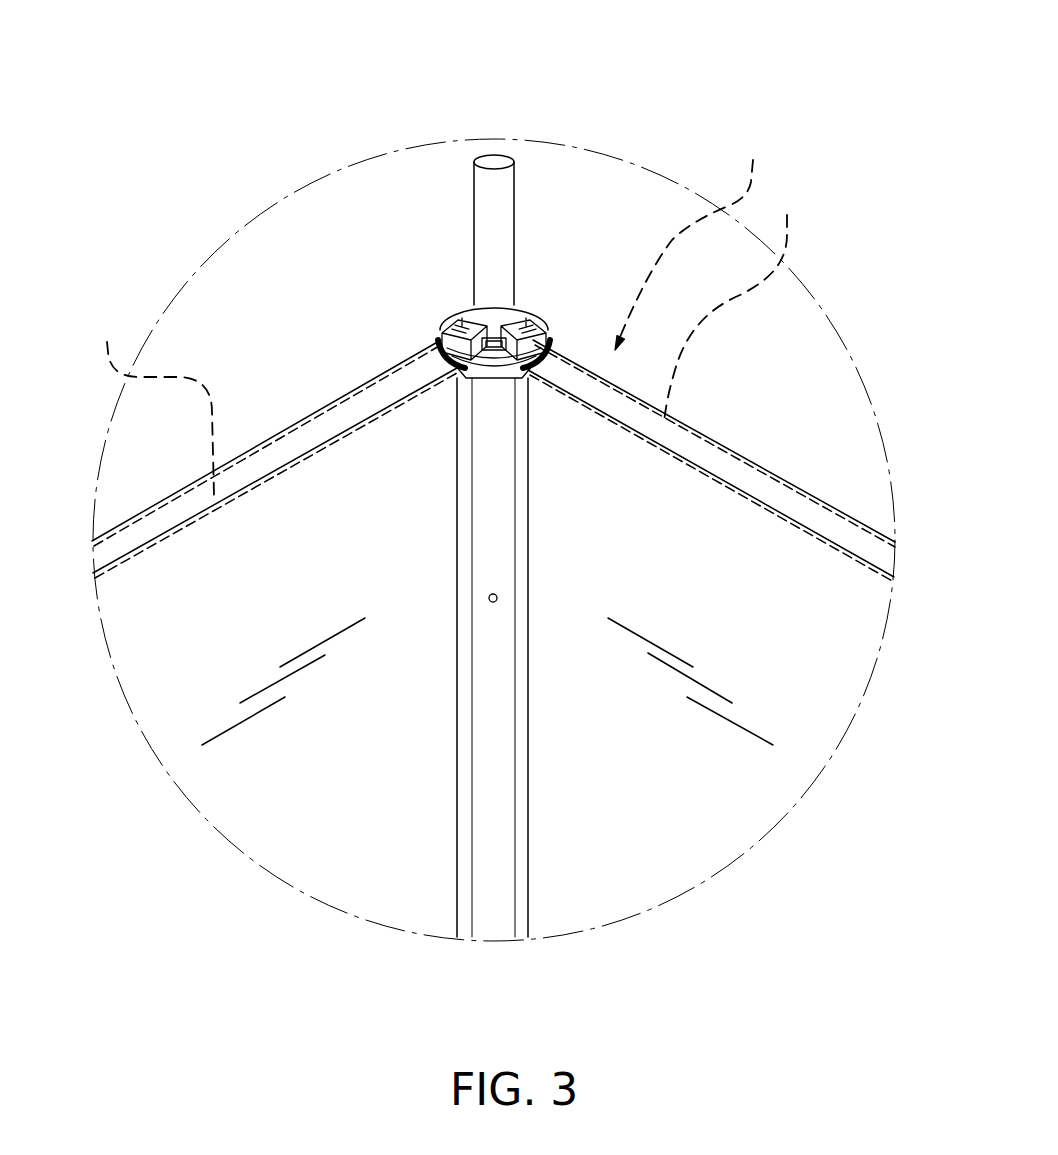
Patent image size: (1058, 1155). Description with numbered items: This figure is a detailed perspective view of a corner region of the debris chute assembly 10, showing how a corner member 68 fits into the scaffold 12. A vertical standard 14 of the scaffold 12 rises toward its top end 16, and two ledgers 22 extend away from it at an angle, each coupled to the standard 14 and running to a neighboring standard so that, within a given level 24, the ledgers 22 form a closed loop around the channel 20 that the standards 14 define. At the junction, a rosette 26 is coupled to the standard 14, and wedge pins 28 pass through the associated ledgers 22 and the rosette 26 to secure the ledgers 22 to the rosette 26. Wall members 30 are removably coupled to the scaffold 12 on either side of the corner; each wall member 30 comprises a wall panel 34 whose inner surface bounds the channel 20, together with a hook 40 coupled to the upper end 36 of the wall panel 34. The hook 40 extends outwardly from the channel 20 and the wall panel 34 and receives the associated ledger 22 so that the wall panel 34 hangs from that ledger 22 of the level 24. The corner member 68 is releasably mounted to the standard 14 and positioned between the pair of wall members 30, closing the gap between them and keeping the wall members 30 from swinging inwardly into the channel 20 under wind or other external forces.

The debris chute assembly 10 is at (618, 50).
The scaffold 12 is at (441, 208).
The standard 14 is at (503, 207).
The top end 16 is at (500, 163).
The channel 20 is at (745, 555).
The ledger 22 is at (448, 335).
The level 24 is at (696, 235).
The rosette 26 is at (470, 310).
The wedge pin 28 is at (447, 325).
The wall member 30 is at (138, 492).
The wall panel 34 is at (204, 720).
The upper end 36 is at (318, 457).
The hook 40 is at (364, 395).
The corner member 68 is at (548, 843).